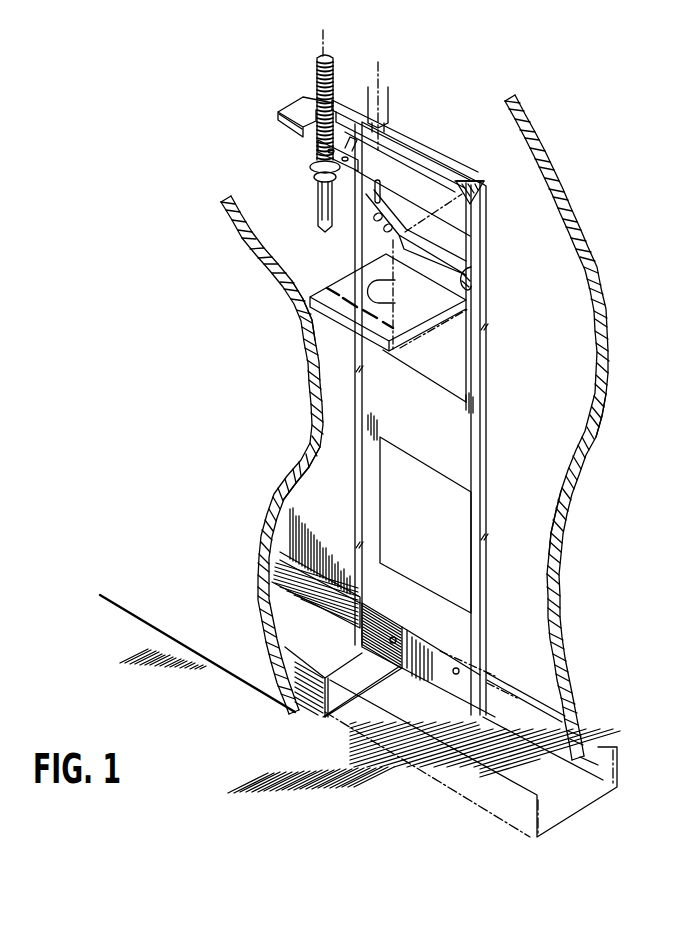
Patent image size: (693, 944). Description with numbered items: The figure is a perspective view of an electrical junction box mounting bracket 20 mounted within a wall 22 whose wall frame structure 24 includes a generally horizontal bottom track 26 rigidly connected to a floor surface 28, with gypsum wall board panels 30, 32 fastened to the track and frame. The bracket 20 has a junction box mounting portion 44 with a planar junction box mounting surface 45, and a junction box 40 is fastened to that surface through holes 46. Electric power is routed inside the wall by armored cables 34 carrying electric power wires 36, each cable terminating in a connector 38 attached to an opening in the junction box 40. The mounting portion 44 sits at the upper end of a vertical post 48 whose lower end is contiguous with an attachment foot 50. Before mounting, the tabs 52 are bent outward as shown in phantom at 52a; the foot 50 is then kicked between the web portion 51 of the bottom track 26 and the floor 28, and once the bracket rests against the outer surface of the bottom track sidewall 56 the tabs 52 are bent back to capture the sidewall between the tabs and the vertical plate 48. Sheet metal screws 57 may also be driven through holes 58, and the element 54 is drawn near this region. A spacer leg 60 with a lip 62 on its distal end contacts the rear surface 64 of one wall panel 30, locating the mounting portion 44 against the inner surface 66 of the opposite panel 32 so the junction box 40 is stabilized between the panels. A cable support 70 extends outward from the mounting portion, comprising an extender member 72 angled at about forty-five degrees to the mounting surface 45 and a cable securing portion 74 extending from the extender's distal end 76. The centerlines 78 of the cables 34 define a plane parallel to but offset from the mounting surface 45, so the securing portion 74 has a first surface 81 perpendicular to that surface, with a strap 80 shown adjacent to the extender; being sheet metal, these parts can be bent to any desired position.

The electrical junction box mounting bracket 20 is at (518, 363).
The wall 22 is at (637, 513).
The wall frame structure 24 is at (364, 745).
The bottom track 26 is at (312, 704).
The floor surface 28 is at (242, 754).
The gypsum wall board panel 30 is at (150, 618).
The gypsum wall board panel 32 is at (608, 408).
The armored cable 34 is at (317, 68).
The electric power wires 36 is at (299, 194).
The connector 38 is at (314, 166).
The electrical junction box 40 is at (252, 250).
The junction box mounting portion 44 is at (499, 263).
The junction box mounting surface 45 is at (474, 220).
The holes 46 is at (468, 286).
The vertical post 48 is at (432, 429).
The foot 50 is at (422, 711).
The web portion 51 is at (369, 681).
The tabs 52 is at (486, 701).
The tabs bent outward 52a is at (327, 558).
The bracket upper edge 54 is at (280, 552).
The bottom track sidewall 56 is at (282, 580).
The sheet metal screws 57 is at (388, 636).
The holes 58 is at (453, 666).
The spacer leg 60 is at (349, 280).
The lip 62 is at (328, 313).
The rear surface 64 is at (321, 448).
The inner surface 66 is at (567, 451).
The cable support 70 is at (466, 161).
The extender member 72 is at (441, 157).
The cable securing portion 74 is at (284, 104).
The distal end 76 is at (412, 176).
The centerlines 78 is at (327, 44).
The strap 80 is at (394, 143).
The first surface 81 is at (292, 118).